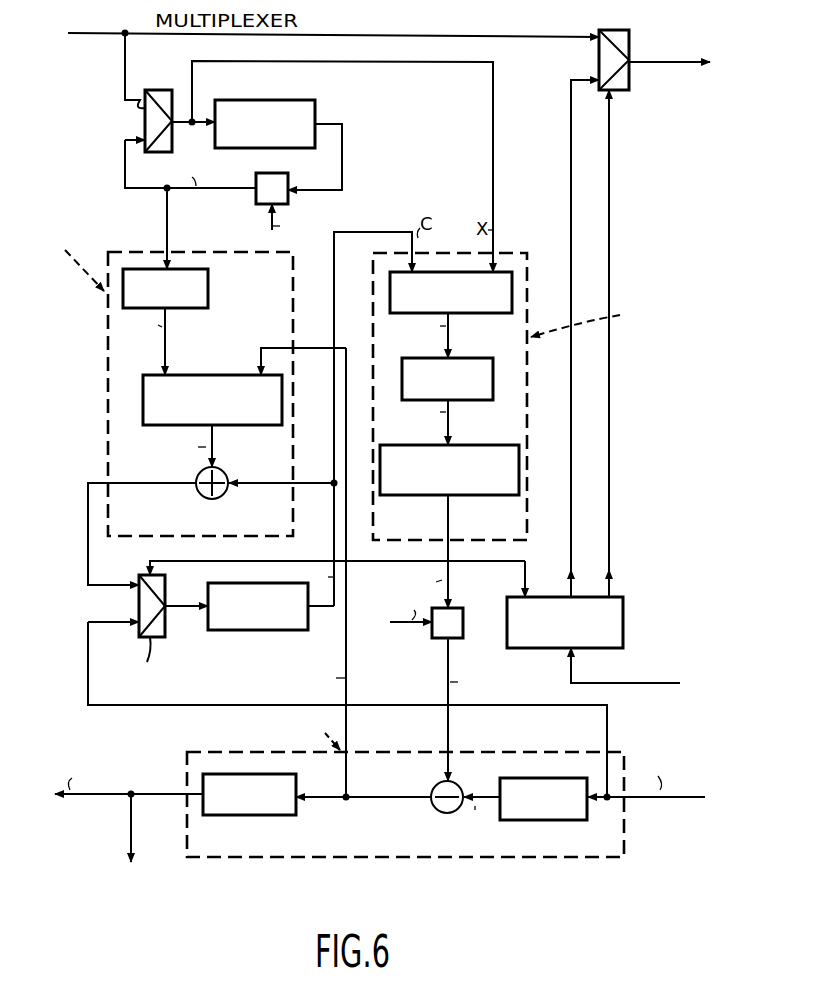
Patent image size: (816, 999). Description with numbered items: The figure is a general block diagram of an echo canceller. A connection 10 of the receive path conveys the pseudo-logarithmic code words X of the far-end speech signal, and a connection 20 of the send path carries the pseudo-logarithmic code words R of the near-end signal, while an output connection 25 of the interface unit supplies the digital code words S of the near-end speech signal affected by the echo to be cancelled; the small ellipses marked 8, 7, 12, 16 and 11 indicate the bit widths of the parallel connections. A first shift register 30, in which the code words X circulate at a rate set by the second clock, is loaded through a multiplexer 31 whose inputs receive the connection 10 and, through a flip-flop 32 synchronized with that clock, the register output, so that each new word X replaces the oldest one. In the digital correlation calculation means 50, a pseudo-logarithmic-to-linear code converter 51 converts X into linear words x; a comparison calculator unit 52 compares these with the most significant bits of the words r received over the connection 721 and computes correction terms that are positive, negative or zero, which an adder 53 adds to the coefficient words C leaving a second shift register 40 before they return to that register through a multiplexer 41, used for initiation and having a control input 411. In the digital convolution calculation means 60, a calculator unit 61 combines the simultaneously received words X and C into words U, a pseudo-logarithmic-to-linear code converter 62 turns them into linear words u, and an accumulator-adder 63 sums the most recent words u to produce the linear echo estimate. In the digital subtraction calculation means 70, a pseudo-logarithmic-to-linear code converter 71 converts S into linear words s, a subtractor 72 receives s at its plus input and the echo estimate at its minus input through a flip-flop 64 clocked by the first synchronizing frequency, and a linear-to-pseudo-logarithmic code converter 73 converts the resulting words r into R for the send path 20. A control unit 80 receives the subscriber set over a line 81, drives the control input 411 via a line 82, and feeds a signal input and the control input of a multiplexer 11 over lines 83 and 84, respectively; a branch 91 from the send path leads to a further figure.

The connection of the receive path 10 is at (90, 34).
The 8-bit bus width 8 is at (372, 27).
The 7-bit bus width 7 is at (310, 340).
The 12-bit bus width 12 is at (456, 582).
The 16-bit bus width 16 is at (441, 425).
The multiplexer 11 is at (441, 338).
The connection of the send path 20 is at (98, 798).
The output connection of the interface unit 25 is at (638, 800).
The first shift register 30 is at (266, 100).
The multiplexer 31 is at (154, 90).
The flip-flop 32 is at (262, 176).
The second shift register 40 is at (262, 632).
The multiplexer 41 is at (139, 604).
The control input of the multiplexer 411 is at (148, 574).
The digital correlation calculation means 50 is at (108, 400).
The pseudo-logarithmic-to-linear code converter 51 is at (208, 292).
The comparison calculator unit 52 is at (204, 375).
The adder 53 is at (222, 472).
The digital convolution calculation means 60 is at (527, 386).
The calculator unit 61 is at (470, 315).
The pseudo-logarithmic-to-linear code converter 62 is at (493, 378).
The accumulator-adder 63 is at (500, 445).
The flip-flop 64 is at (463, 625).
The digital subtraction calculation means 70 is at (389, 858).
The pseudo-logarithmic-to-linear code converter 71 is at (560, 820).
The subtractor 72 is at (434, 786).
The linear-to-pseudo-logarithmic code converter 73 is at (252, 816).
The connection 721 is at (348, 690).
The control unit 80 is at (623, 622).
The line 81 is at (662, 682).
The line 82 is at (530, 584).
The line 83 is at (571, 143).
The line 84 is at (609, 143).
The output to FIG. 8 91 is at (132, 845).